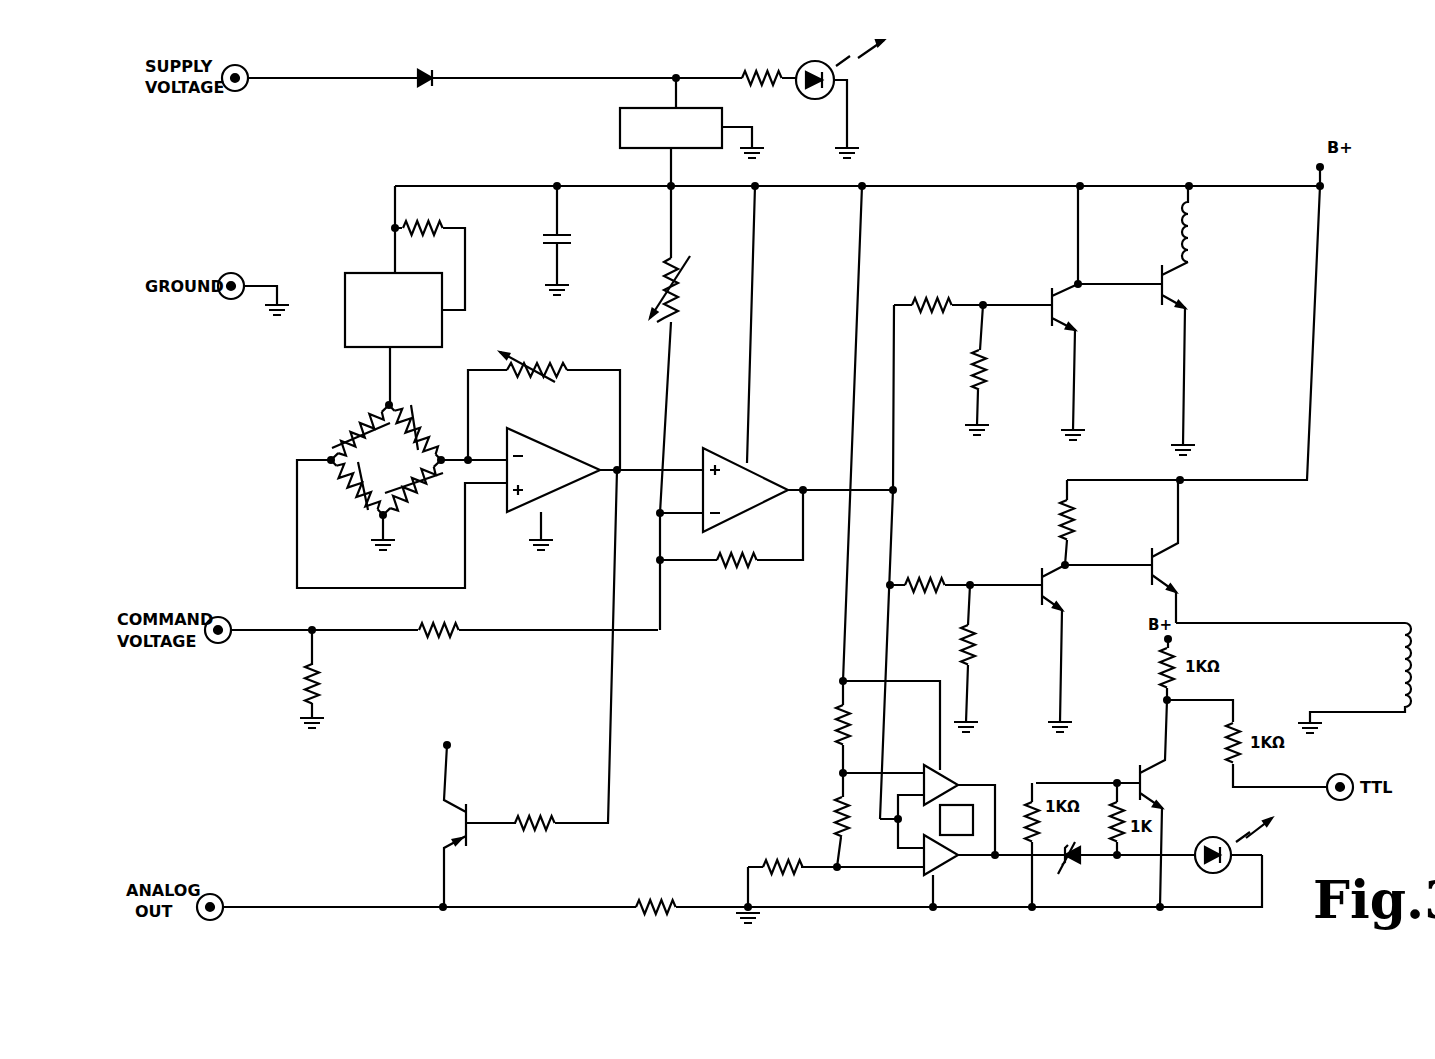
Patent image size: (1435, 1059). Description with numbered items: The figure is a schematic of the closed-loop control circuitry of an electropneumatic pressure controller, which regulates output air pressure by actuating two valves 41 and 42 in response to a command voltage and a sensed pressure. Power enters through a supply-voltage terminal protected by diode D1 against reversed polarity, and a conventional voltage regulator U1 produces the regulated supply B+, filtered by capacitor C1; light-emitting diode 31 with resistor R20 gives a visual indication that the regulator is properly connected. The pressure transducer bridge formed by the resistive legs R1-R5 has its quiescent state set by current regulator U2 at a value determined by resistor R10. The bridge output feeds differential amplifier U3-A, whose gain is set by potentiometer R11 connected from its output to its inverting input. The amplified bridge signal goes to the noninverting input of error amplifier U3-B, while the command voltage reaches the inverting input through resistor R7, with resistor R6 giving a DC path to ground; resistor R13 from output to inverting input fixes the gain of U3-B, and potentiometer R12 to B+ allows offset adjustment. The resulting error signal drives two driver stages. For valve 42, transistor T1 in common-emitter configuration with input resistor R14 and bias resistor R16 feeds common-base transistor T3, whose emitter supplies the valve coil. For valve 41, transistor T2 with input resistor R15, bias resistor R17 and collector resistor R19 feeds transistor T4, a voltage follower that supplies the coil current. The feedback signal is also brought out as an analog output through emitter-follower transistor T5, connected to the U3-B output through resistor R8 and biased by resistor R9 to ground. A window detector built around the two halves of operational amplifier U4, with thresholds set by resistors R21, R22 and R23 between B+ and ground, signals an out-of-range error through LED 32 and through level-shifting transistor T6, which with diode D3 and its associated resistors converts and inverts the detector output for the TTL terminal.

The light-emitting diode 31 is at (828, 97).
The LED 32 is at (1218, 873).
The valve 41 is at (1293, 678).
The valve 42 is at (1220, 224).
The diode D1 is at (425, 87).
The diode D3 is at (1078, 868).
The voltage regulator U1 is at (692, 132).
The current regulator U2 is at (393, 339).
The differential amplifier U3-A is at (562, 489).
The error amplifier U3-B is at (778, 359).
The operational amplifier U4 is at (916, 792).
The filter capacitor C1 is at (565, 237).
The bridge resistors R1-R5 is at (330, 432).
The resistor R6 is at (339, 679).
The resistor R7 is at (454, 622).
The resistor R8 is at (548, 814).
The bias resistor R9 is at (672, 898).
The resistor R10 is at (428, 255).
The potentiometer R11 is at (566, 360).
The potentiometer R12 is at (682, 349).
The resistor R13 is at (762, 554).
The input resistor R14 is at (952, 298).
The input resistor R15 is at (940, 576).
The bias resistor R16 is at (996, 370).
The bias resistor R17 is at (992, 658).
The collector resistor R19 is at (1087, 524).
The resistor R20 is at (768, 70).
The resistor R21 is at (834, 724).
The resistor R22 is at (834, 808).
The resistor R23 is at (796, 858).
The transistor T1 is at (1107, 313).
The transistor T2 is at (1023, 648).
The transistor T3 is at (1182, 358).
The transistor T4 is at (1127, 551).
The transistor T5 is at (469, 811).
The transistor T6 is at (1154, 803).